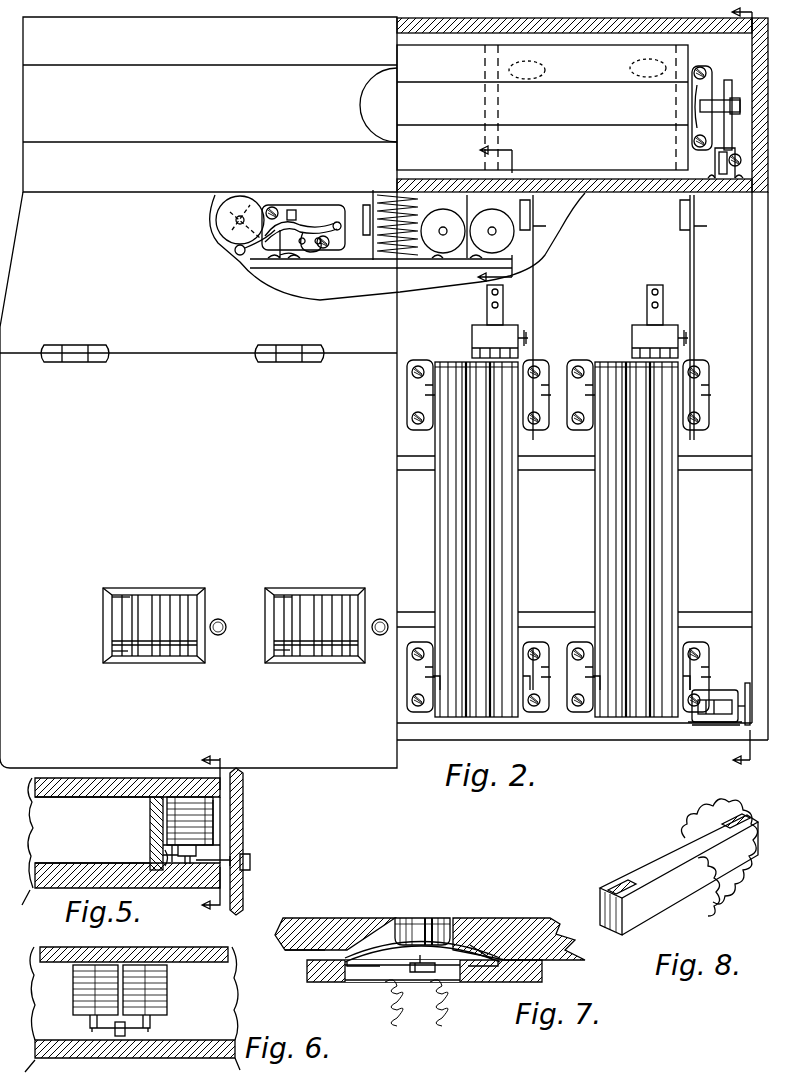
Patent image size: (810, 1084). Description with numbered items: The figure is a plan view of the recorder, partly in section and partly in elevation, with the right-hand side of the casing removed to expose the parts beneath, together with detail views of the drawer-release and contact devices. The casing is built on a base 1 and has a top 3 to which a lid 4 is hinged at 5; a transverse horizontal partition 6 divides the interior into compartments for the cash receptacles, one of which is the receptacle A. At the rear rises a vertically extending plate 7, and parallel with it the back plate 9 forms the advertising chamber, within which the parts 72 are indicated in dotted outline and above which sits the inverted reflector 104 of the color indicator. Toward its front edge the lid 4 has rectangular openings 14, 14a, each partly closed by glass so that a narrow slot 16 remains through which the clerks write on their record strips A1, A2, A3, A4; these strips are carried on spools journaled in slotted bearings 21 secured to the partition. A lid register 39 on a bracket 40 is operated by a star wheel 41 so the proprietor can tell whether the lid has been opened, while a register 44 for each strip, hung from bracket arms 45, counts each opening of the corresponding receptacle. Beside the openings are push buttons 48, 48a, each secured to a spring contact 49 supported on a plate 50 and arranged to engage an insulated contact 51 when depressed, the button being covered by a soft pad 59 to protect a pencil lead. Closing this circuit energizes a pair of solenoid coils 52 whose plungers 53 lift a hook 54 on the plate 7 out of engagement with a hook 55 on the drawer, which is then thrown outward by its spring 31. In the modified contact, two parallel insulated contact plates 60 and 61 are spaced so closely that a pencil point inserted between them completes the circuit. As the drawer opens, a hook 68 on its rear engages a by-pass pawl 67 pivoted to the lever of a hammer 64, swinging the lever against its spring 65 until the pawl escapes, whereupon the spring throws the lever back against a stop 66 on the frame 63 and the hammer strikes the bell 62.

In FIG. 2, the base 1 is at (733, 386).
In FIG. 2, the top of the casing 3 is at (210, 154).
In FIG. 2, the lid 4 is at (198, 480).
In FIG. 7, the lid 4 is at (365, 926).
In FIG. 2, the hinge 5 is at (486, 209).
In FIG. 2, the transverse horizontal partition 6 is at (200, 769).
In FIG. 5, the transverse horizontal partition 6 is at (203, 891).
In FIG. 2, the vertically extending plate 7 is at (650, 192).
In FIG. 5, the vertically extending plate 7 is at (243, 798).
In FIG. 2, the back plate 9 is at (622, 18).
In FIG. 2, the rectangular opening 14 is at (108, 627).
In FIG. 2, the rectangular opening 14a is at (287, 590).
In FIG. 2, the narrow slot 16 is at (112, 651).
In FIG. 2, the slotted bearing 21 is at (405, 689).
In FIG. 2, the drawer spring 31 is at (385, 195).
In FIG. 2, the lid register 39 is at (710, 690).
In FIG. 2, the bracket 40 is at (717, 122).
In FIG. 2, the star wheel 41 is at (750, 692).
In FIG. 2, the register 44 is at (632, 338).
In FIG. 2, the bracket arm 45 is at (647, 306).
In FIG. 2, the push button 48 is at (224, 635).
In FIG. 7, the push button 48 is at (432, 918).
In FIG. 2, the push button 48a is at (385, 620).
In FIG. 7, the spring contact 49 is at (455, 960).
In FIG. 7, the plate 50 is at (345, 982).
In FIG. 7, the contact 51 is at (445, 975).
In FIG. 2, the solenoid coil 52 is at (492, 208).
In FIG. 5, the solenoid coil 52 is at (213, 820).
In FIG. 6, the solenoid coil 52 is at (182, 994).
In FIG. 5, the solenoid plunger 53 is at (196, 856).
In FIG. 6, the solenoid plunger 53 is at (172, 1022).
In FIG. 2, the hook 54 is at (463, 203).
In FIG. 5, the hook 54 is at (250, 862).
In FIG. 6, the hook 54 is at (125, 1030).
In FIG. 2, the drawer hook 55 is at (467, 258).
In FIG. 5, the drawer hook 55 is at (163, 852).
In FIG. 7, the soft pad 59 is at (405, 918).
In FIG. 8, the contact plate 60 is at (670, 855).
In FIG. 8, the contact plate 61 is at (675, 897).
In FIG. 2, the bell 62 is at (240, 207).
In FIG. 2, the frame 63 is at (307, 210).
In FIG. 2, the hammer 64 is at (235, 250).
In FIG. 2, the spring 65 is at (327, 250).
In FIG. 2, the stop 66 is at (292, 210).
In FIG. 2, the by-pass pawl 67 is at (300, 252).
In FIG. 2, the hook 68 is at (280, 240).
In FIG. 2, the lamp 72 is at (682, 68).
In FIG. 2, the inverted reflector 104 is at (360, 100).
In FIG. 5, the cash receptacle A is at (113, 825).
In FIG. 2, the record strip A1 is at (120, 603).
In FIG. 2, the record strip A2 is at (283, 603).
In FIG. 2, the record strip A3 is at (487, 563).
In FIG. 2, the record strip A4 is at (650, 563).